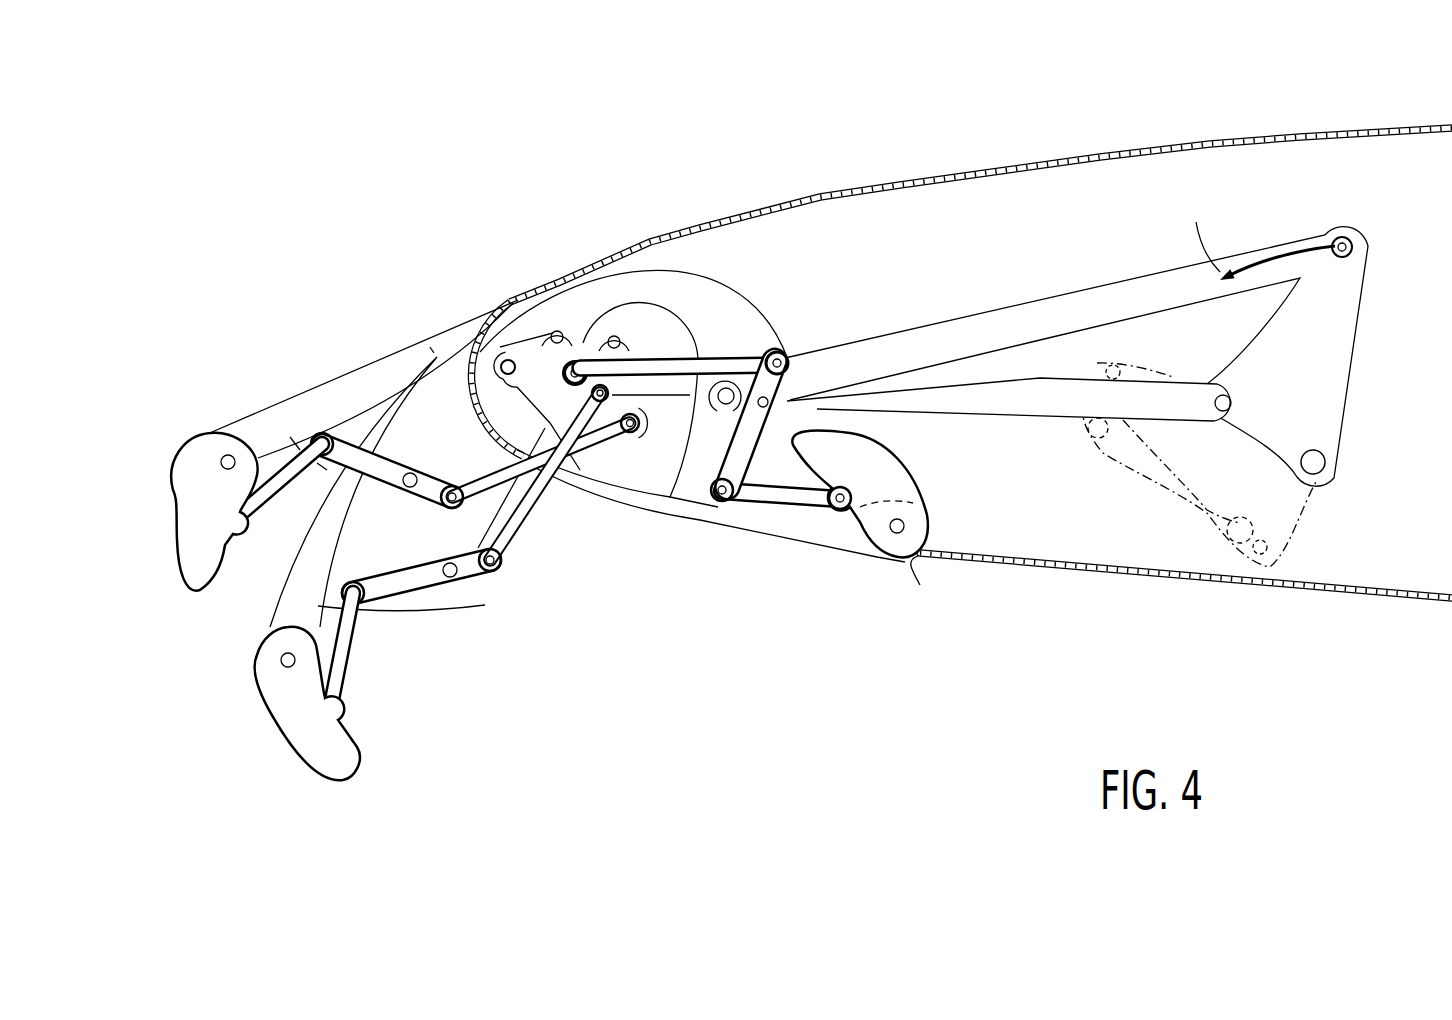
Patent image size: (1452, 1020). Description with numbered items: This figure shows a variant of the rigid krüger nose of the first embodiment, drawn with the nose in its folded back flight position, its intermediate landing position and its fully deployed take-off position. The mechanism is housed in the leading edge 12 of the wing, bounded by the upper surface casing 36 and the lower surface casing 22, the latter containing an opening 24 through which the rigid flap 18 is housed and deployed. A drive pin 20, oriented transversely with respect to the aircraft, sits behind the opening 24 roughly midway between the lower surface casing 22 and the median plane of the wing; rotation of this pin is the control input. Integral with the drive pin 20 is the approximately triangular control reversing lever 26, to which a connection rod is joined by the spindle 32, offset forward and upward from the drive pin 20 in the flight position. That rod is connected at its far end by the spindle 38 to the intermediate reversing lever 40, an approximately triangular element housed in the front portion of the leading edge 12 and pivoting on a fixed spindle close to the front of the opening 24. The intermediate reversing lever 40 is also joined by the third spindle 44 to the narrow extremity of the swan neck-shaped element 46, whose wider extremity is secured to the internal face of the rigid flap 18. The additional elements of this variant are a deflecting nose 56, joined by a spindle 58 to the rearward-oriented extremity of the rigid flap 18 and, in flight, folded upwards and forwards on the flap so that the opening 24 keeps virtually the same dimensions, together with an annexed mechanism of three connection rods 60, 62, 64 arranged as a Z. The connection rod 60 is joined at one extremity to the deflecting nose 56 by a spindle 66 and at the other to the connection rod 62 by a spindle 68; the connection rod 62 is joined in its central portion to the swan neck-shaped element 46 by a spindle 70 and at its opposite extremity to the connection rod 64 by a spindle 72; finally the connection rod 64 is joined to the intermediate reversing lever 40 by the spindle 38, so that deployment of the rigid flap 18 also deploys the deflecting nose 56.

The leading edge 12 is at (935, 175).
The rigid flap 18 is at (795, 543).
The drive pin 20 is at (1320, 462).
The lower surface casing 22 is at (1380, 594).
The opening 24 is at (920, 585).
The control reversing lever 26 is at (1355, 300).
The spindle 32 is at (1245, 408).
The upper surface casing 36 is at (1145, 150).
The spindle 38 is at (578, 355).
The intermediate reversing lever 40 is at (478, 400).
The third spindle 44 is at (480, 340).
The swan neck-shaped element 46 is at (668, 275).
The deflecting nose 56 is at (190, 487).
The spindle 58 is at (905, 527).
The connection rod 60 is at (770, 492).
The connection rod 62 is at (728, 450).
The connection rod 64 is at (717, 355).
The spindle 66 is at (843, 510).
The spindle 68 is at (720, 503).
The spindle 70 is at (806, 398).
The spindle 72 is at (790, 360).